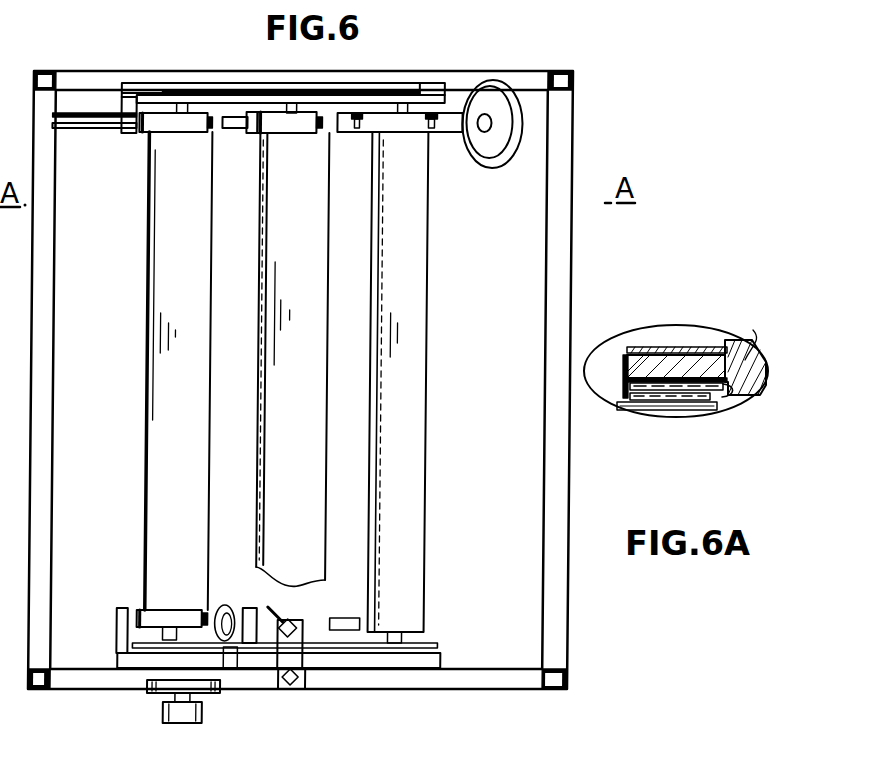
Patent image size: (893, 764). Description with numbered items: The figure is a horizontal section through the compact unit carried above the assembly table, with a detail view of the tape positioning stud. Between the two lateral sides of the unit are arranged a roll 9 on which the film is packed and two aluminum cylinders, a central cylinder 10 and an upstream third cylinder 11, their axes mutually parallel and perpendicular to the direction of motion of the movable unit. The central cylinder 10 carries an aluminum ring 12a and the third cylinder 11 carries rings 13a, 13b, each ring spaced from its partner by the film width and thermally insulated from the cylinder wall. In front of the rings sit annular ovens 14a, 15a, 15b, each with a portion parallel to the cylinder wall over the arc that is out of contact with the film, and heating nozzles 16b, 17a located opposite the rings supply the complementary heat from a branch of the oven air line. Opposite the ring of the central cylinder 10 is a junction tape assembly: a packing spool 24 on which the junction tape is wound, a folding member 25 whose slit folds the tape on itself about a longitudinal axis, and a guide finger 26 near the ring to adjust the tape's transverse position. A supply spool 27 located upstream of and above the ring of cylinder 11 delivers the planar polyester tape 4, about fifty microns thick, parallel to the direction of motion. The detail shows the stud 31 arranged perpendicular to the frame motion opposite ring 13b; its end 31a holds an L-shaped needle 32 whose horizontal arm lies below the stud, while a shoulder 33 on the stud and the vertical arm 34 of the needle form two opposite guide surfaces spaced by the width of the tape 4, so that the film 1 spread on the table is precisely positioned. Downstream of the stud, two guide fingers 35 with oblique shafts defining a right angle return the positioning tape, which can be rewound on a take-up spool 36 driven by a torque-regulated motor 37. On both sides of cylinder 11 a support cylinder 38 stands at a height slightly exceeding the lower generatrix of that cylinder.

In FIG. 6, the spool 27 is at (103, 117).
In FIG. 6, the heating nozzle 17a is at (228, 120).
In FIG. 6, the annular oven 15a is at (152, 124).
In FIG. 6, the aluminum ring 13a is at (210, 124).
In FIG. 6, the annular oven 14a is at (264, 128).
In FIG. 6, the aluminum ring 12a is at (325, 121).
In FIG. 6, the guide finger 26 is at (355, 129).
In FIG. 6, the folding member 25 is at (440, 130).
In FIG. 6, the packing spool 24 is at (497, 147).
In FIG. 6, the cylinder 11 is at (160, 248).
In FIG. 6, the cylinder 10 is at (272, 245).
In FIG. 6, the roll 9 is at (430, 345).
In FIG. 6, the aluminum ring 13b is at (210, 612).
In FIG. 6, the annular oven 15b is at (178, 617).
In FIG. 6, the stud 31 is at (227, 608).
In FIG. 6A, the stud 31 is at (708, 367).
In FIG. 6, the support cylinder 38 is at (120, 627).
In FIG. 6, the heating nozzle 16b is at (346, 628).
In FIG. 6, the torque-regulated motor 37 is at (168, 712).
In FIG. 6, the take-up spool 36 is at (220, 690).
In FIG. 6, the guide finger 35 is at (290, 687).
In FIG. 6A, the end of the stud 31a is at (625, 357).
In FIG. 6A, the planar polyester tape 4 is at (670, 350).
In FIG. 6A, the vertical arm 34 is at (623, 386).
In FIG. 6A, the film 1 is at (639, 410).
In FIG. 6A, the L-shaped needle 32 is at (673, 397).
In FIG. 6A, the shoulder 33 is at (724, 386).